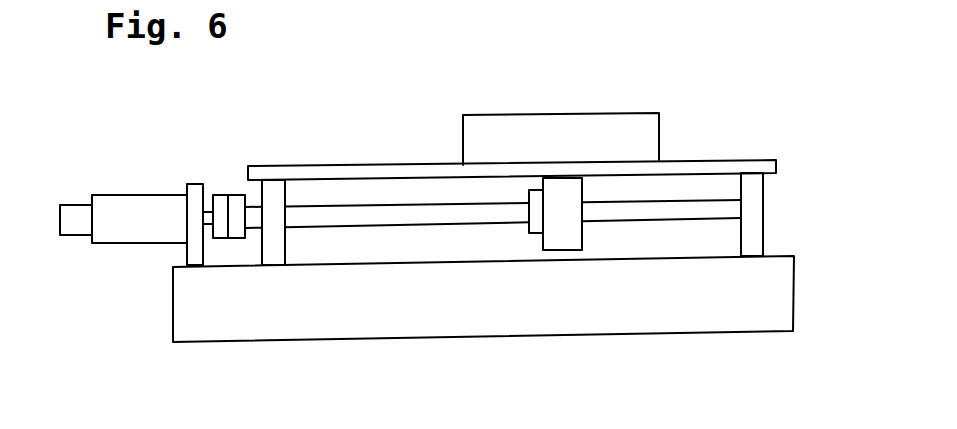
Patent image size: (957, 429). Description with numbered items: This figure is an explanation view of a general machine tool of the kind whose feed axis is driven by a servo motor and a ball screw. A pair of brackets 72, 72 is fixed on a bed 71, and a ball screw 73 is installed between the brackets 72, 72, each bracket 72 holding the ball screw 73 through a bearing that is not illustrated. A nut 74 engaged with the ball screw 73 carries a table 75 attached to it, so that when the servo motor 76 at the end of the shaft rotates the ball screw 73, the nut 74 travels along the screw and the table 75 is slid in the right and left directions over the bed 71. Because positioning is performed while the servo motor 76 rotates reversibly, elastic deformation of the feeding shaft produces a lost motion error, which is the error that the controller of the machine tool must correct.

The bed 71 is at (387, 325).
The bracket 72 is at (276, 255).
The ball screw 73 is at (487, 215).
The nut 74 is at (562, 237).
The table 75 is at (596, 123).
The servo motor 76 is at (133, 205).